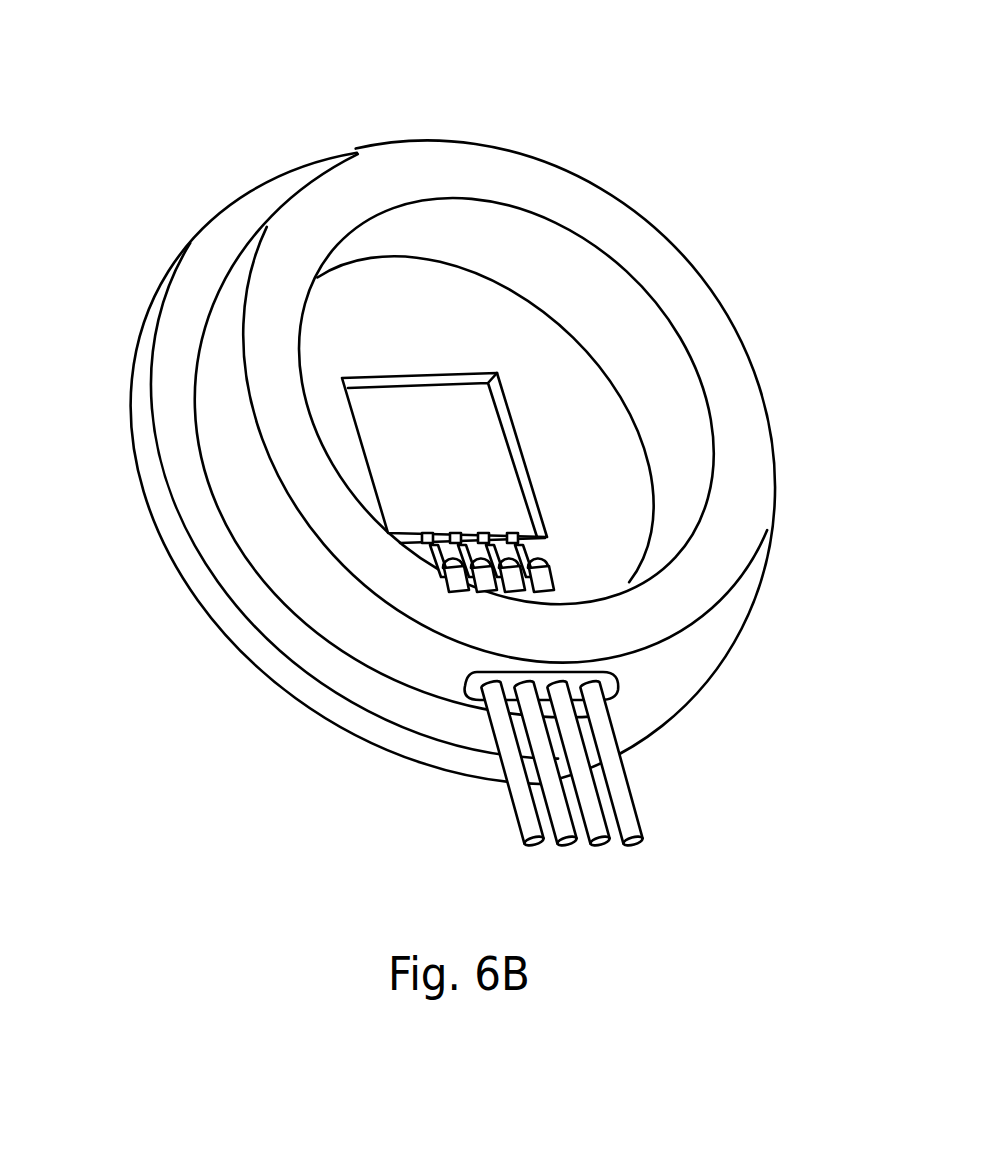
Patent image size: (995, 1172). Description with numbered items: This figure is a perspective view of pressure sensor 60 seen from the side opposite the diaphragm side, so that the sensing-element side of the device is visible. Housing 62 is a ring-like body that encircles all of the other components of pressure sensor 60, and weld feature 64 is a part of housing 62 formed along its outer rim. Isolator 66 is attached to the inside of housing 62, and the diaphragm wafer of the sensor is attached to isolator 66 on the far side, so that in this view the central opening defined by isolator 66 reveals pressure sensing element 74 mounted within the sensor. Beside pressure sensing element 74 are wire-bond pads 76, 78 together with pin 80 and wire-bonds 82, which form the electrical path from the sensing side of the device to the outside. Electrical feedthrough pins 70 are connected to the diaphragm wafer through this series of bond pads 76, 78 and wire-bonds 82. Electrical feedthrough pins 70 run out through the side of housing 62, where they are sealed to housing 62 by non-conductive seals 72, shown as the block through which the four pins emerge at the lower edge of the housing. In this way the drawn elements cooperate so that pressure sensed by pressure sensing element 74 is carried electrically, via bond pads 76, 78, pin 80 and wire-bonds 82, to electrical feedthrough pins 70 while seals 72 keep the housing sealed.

The pressure sensor 60 is at (228, 85).
The housing 62 is at (268, 528).
The weld feature 64 is at (250, 665).
The isolator 66 is at (380, 301).
The electrical feedthrough pins 70 is at (648, 778).
The non-conductive seals 72 is at (620, 693).
The pressure sensing element 74 is at (466, 421).
The bond pad 76 is at (439, 586).
The bond pad 78 is at (470, 524).
The pin 80 is at (578, 556).
The wire-bonds 82 is at (556, 546).